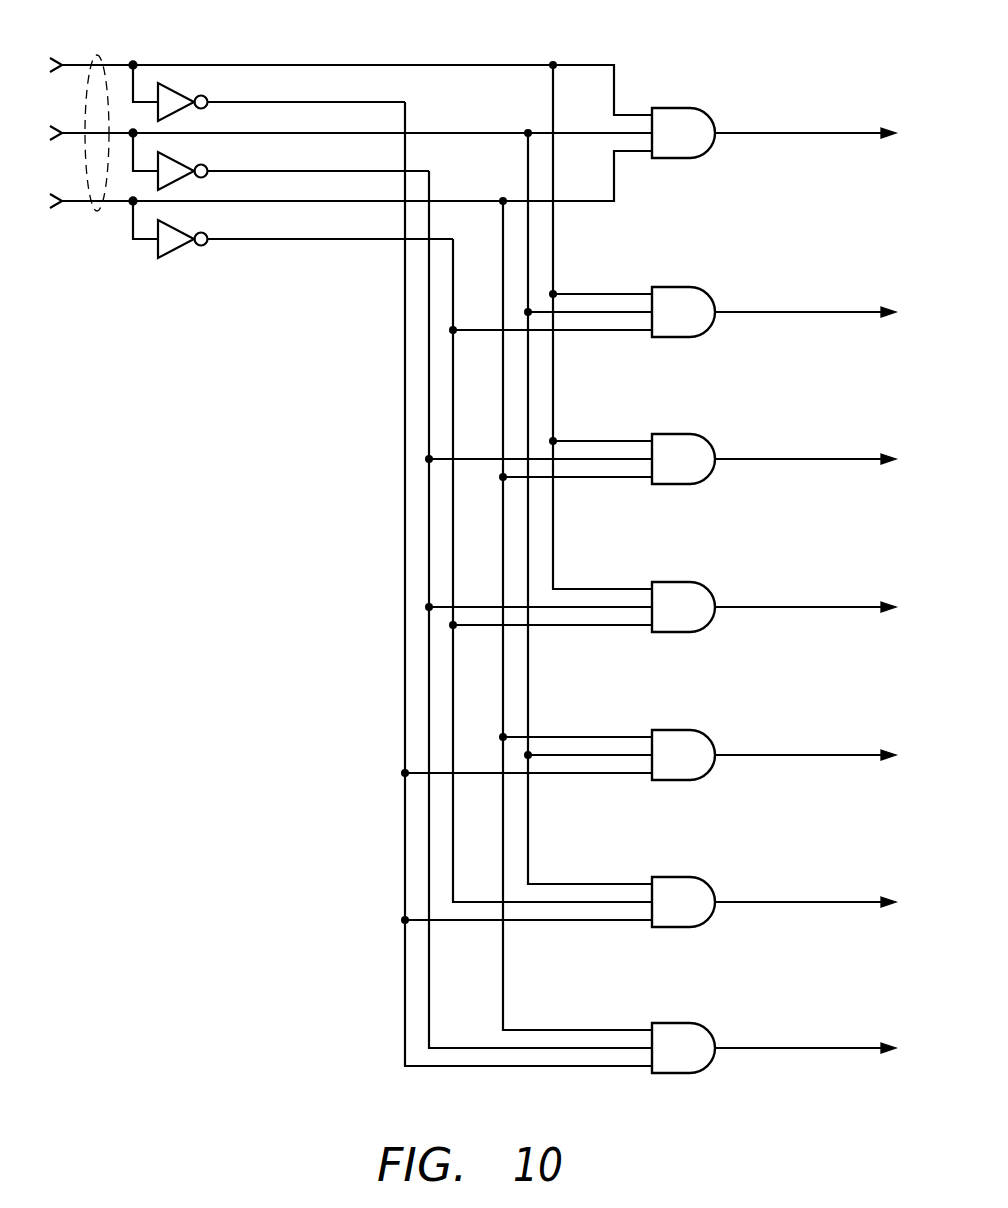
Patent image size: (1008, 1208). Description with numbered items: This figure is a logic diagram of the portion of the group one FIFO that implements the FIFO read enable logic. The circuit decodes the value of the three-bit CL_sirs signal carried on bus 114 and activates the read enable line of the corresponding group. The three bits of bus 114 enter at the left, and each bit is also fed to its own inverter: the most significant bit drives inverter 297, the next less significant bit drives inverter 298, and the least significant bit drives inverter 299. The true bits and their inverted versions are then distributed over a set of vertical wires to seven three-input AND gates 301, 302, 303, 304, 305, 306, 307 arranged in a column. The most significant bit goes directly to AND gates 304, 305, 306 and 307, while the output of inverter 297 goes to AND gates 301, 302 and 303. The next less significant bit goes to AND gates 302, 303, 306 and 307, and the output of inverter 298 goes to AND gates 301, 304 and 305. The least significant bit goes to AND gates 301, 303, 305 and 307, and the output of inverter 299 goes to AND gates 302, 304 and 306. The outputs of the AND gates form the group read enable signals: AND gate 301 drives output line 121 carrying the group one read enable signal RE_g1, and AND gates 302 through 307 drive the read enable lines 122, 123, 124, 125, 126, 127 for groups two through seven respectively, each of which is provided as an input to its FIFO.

The bus 114 is at (98, 54).
The inverter 297 is at (182, 92).
The inverter 298 is at (182, 161).
The inverter 299 is at (182, 229).
The AND gate 301 is at (675, 1021).
The AND gate 302 is at (675, 875).
The AND gate 303 is at (675, 728).
The AND gate 304 is at (675, 580).
The AND gate 305 is at (675, 432).
The AND gate 306 is at (675, 285).
The AND gate 307 is at (675, 106).
The output line 121 is at (798, 1045).
The read enable signal line 122 is at (798, 899).
The read enable signal line 123 is at (798, 752).
The read enable signal line 124 is at (798, 604).
The read enable signal line 125 is at (798, 456).
The read enable signal line 126 is at (798, 309).
The read enable signal line 127 is at (798, 130).